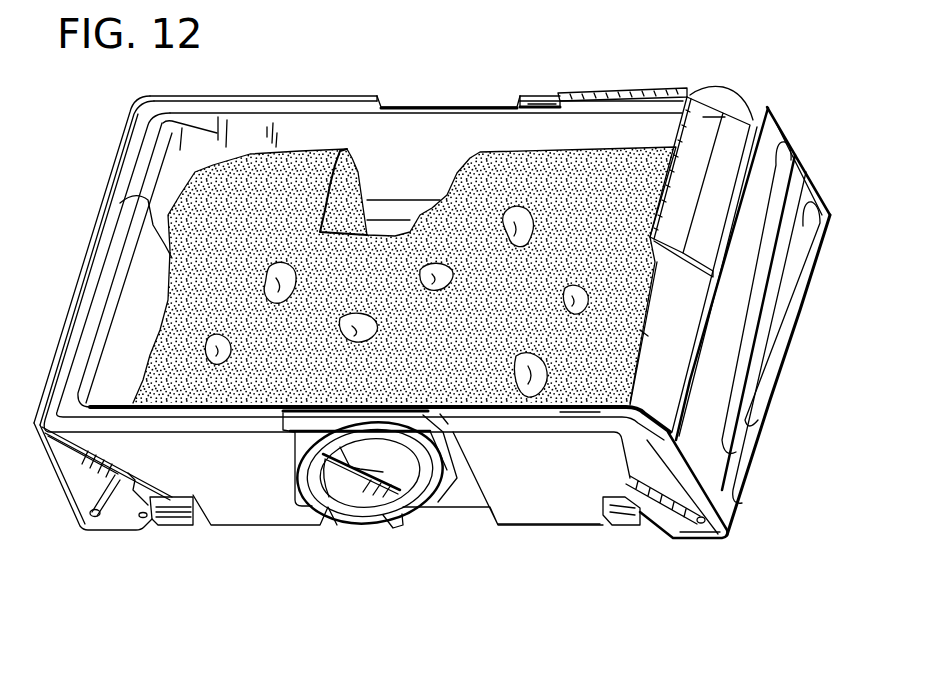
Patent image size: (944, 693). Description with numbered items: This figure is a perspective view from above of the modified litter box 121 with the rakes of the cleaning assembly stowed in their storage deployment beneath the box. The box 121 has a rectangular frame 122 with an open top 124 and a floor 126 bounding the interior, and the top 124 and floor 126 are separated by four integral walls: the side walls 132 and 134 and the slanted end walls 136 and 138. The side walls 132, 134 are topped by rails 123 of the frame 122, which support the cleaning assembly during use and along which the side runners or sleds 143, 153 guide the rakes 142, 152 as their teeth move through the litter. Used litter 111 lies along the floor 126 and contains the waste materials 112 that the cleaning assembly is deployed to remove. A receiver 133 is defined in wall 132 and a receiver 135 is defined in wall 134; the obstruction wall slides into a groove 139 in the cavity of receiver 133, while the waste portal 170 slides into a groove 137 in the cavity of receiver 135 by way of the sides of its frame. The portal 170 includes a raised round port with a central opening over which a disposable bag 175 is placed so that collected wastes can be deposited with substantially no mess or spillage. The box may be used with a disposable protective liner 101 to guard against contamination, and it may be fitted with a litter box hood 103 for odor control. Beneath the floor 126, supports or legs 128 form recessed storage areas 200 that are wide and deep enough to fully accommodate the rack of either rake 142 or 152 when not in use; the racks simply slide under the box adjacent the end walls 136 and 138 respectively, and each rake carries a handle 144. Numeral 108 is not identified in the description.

The disposable protective liner 101 is at (173, 93).
The litter box hood 103 is at (758, 128).
The cartridge assembly 108 is at (482, 66).
The used litter 111 is at (297, 187).
The waste materials 112 is at (567, 277).
The modified litter box 121 is at (536, 86).
The frame 122 is at (556, 100).
The rails 123 is at (292, 100).
The open top 124 is at (204, 444).
The floor 126 is at (380, 227).
The feet 128 is at (543, 520).
The side wall 132 is at (662, 127).
The receiver 133 is at (533, 105).
The side wall 134 is at (565, 411).
The receiver 135 is at (445, 412).
The end wall 136 is at (645, 332).
The groove 137 is at (287, 403).
The end wall 138 is at (147, 295).
The groove 139 is at (387, 103).
The cleaning rake 142 is at (670, 550).
The side runner 143 is at (602, 502).
The handle 144 is at (765, 297).
The cleaning rake 152 is at (135, 556).
The side runner 153 is at (152, 495).
The waste portal 170 is at (355, 537).
The disposable bag 175 is at (305, 470).
The storage areas 200 is at (199, 530).